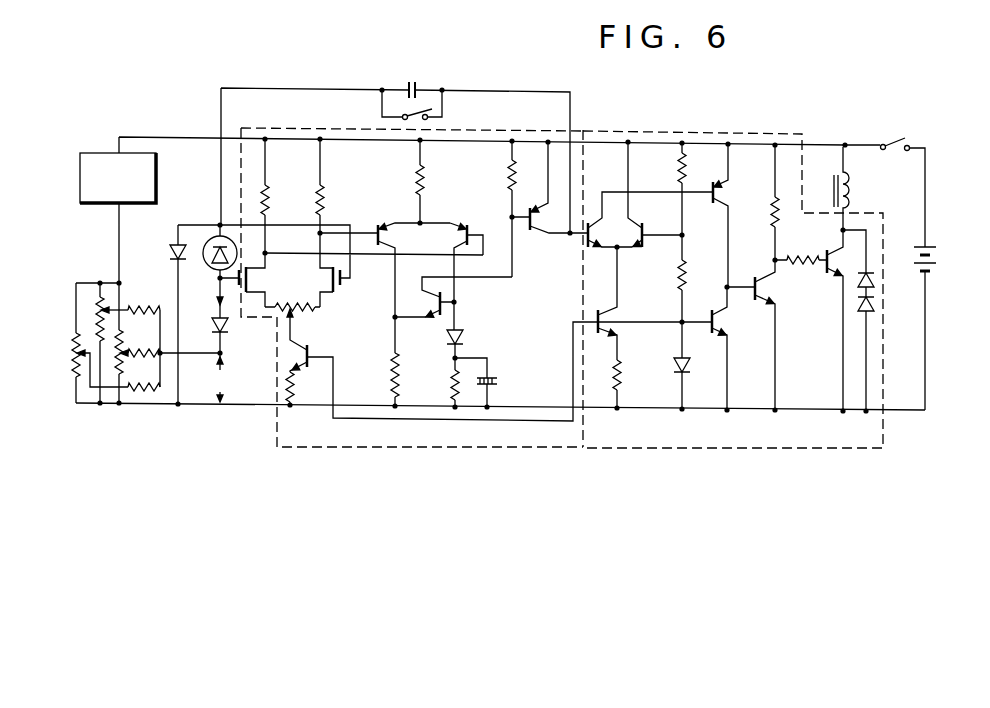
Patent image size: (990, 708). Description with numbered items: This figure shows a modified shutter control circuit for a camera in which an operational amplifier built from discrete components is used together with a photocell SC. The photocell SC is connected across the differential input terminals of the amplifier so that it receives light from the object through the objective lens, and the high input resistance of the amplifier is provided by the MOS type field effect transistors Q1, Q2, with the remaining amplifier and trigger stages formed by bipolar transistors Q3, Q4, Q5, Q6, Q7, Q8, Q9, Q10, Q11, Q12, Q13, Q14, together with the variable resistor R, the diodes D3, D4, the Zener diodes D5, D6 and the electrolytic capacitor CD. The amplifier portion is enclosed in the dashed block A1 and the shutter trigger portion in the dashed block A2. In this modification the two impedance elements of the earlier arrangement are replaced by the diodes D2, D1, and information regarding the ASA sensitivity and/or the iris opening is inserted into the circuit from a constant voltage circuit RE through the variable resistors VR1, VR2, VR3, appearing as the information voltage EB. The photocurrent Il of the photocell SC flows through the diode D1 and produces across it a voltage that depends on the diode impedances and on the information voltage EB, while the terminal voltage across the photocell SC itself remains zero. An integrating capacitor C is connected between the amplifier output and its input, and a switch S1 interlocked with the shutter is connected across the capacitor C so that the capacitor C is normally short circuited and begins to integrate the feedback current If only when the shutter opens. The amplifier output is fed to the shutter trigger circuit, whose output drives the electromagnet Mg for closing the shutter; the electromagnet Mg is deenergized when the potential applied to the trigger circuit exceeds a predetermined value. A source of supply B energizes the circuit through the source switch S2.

The constant voltage circuit RE is at (157, 177).
The photocell SC is at (212, 241).
The diode D1 is at (228, 328).
The diode D2 is at (163, 261).
The diode D3 is at (462, 340).
The diode D4 is at (690, 367).
The Zener diode D5 is at (877, 279).
The Zener diode D6 is at (877, 305).
The MOS type field effect transistor Q1 is at (253, 279).
The MOS type field effect transistor Q2 is at (330, 277).
The bipolar transistor Q3 is at (311, 350).
The bipolar transistor Q4 is at (414, 270).
The bipolar transistor Q5 is at (455, 276).
The bipolar transistor Q6 is at (436, 318).
The bipolar transistor Q7 is at (550, 205).
The bipolar transistor Q8 is at (650, 235).
The bipolar transistor Q9 is at (655, 209).
The bipolar transistor Q10 is at (612, 330).
The bipolar transistor Q11 is at (718, 193).
The bipolar transistor Q12 is at (722, 318).
The bipolar transistor Q13 is at (764, 290).
The bipolar transistor Q14 is at (835, 250).
The variable resistor R is at (303, 314).
The integrating capacitor C is at (412, 70).
The electrolytic capacitor CD is at (500, 383).
The switch S1 is at (435, 114).
The source switch S2 is at (896, 128).
The electromagnet Mg is at (852, 195).
The source of supply B is at (940, 254).
The variable resistor VR1 is at (72, 347).
The variable resistor VR2 is at (96, 311).
The variable resistor VR3 is at (116, 368).
The first circuit block A1 is at (276, 426).
The second circuit block A2 is at (882, 430).
The feedback current If is at (277, 88).
The photocurrent Il is at (215, 300).
The information voltage EB is at (217, 377).